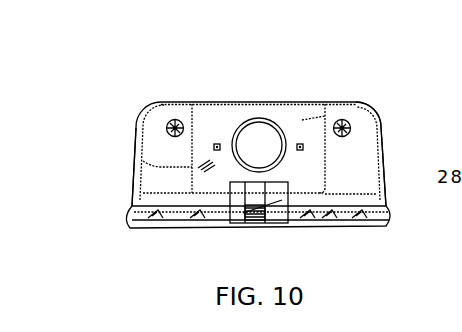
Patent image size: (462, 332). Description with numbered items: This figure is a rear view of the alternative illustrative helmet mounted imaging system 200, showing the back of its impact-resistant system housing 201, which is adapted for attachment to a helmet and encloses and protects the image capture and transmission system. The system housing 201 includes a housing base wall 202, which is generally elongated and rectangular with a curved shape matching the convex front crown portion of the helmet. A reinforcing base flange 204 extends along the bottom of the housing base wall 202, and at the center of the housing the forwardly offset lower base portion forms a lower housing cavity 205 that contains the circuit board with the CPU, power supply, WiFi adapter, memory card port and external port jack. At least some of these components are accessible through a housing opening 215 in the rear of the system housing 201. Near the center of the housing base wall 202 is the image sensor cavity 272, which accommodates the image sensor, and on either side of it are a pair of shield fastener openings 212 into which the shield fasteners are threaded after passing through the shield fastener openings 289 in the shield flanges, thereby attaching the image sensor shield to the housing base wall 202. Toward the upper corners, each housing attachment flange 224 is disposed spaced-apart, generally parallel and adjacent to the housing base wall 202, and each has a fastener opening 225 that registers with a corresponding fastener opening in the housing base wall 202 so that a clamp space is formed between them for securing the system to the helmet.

The helmet mounted imaging system 200 is at (254, 121).
The system housing 201 is at (372, 91).
The housing base wall 202 is at (355, 101).
The reinforcing base flange 204 is at (185, 228).
The lower housing cavity 205 is at (147, 164).
The shield fastener openings 212 is at (217, 143).
The housing opening 215 is at (242, 226).
The housing attachment flange 224 is at (137, 119).
The fastener opening 225 is at (172, 120).
The image sensor cavity 272 is at (266, 118).
The shield fastener openings 289 is at (461, 241).